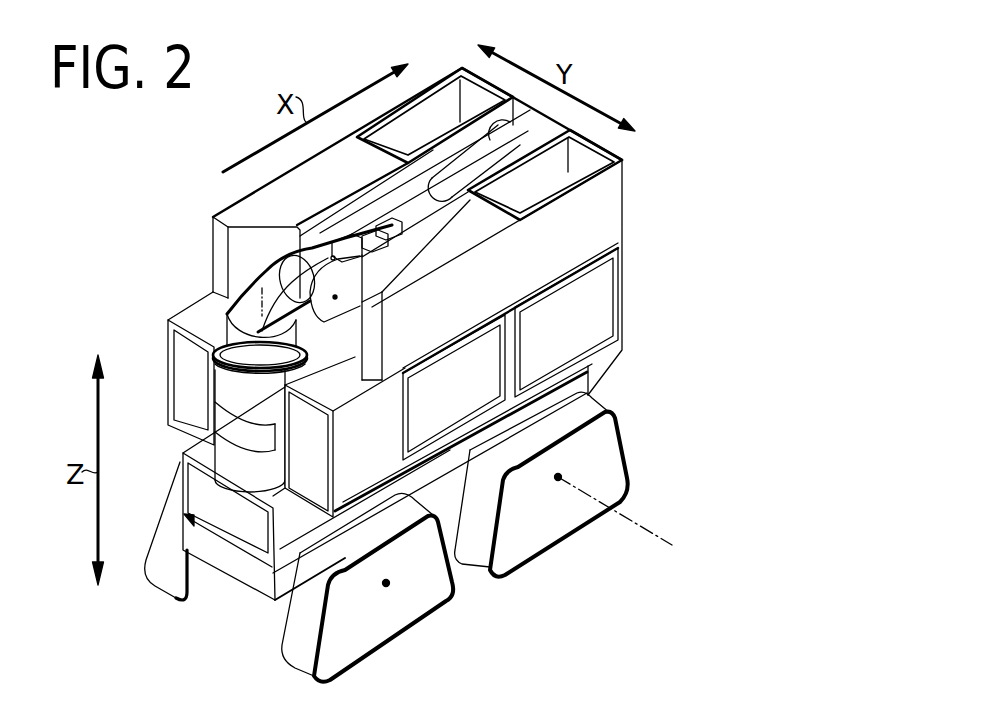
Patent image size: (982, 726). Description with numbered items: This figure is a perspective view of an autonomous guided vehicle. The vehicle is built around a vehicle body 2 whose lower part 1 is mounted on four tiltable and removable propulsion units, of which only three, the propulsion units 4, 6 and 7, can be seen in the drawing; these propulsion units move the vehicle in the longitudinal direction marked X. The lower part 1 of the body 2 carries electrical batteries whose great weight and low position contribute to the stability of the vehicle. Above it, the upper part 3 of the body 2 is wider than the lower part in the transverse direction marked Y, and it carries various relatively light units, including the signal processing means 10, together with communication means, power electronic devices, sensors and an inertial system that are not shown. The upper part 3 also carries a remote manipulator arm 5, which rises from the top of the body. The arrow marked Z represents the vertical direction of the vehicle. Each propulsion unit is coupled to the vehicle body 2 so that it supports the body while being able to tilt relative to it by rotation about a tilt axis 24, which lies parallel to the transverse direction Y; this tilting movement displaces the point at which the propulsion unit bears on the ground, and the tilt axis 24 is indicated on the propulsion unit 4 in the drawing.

The lower part 1 is at (446, 488).
The vehicle body 2 is at (645, 208).
The upper part 3 is at (628, 268).
The propulsion unit 4 is at (569, 518).
The remote manipulator arm 5 is at (517, 147).
The propulsion unit 6 is at (403, 622).
The propulsion unit 7 is at (193, 583).
The signal processing means 10 is at (443, 376).
The tilt axis 24 is at (638, 523).